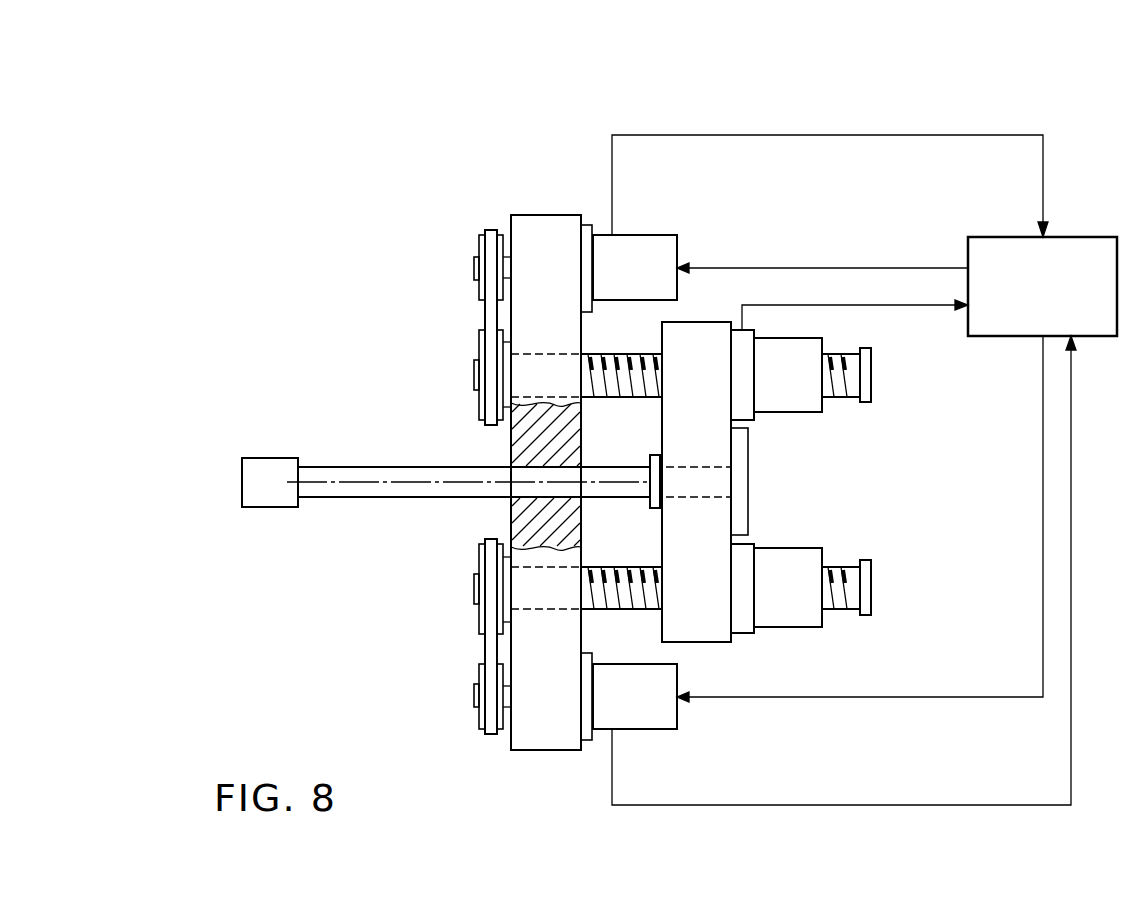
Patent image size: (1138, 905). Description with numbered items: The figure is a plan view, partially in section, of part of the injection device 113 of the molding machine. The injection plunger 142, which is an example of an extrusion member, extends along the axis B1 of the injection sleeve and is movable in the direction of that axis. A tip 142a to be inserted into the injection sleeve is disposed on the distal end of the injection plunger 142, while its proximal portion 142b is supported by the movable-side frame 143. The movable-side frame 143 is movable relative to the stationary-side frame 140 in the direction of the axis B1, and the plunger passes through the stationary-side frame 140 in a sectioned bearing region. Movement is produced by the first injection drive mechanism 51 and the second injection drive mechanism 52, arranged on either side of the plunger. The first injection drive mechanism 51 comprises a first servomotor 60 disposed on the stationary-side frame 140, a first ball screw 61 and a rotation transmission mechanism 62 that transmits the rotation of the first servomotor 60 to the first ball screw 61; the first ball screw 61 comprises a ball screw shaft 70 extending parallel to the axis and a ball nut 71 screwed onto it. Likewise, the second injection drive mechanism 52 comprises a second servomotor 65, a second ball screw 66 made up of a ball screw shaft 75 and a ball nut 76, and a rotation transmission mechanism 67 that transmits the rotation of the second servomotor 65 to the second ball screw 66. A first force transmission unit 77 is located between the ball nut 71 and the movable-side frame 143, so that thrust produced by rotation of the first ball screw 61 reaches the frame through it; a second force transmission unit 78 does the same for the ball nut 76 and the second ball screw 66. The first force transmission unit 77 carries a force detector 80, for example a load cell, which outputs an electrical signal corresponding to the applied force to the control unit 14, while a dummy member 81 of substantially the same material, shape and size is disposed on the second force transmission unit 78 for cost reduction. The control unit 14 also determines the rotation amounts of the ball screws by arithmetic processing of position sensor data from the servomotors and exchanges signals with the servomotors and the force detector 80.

The injection device 113 is at (813, 84).
The stationary-side frame 140 is at (544, 214).
The axis B1 is at (462, 482).
The injection plunger 142 is at (365, 466).
The tip 142a is at (272, 457).
The proximal portion 142b is at (649, 460).
The movable-side frame 143 is at (715, 482).
The rotation transmission mechanism 62 is at (483, 313).
The rotation transmission mechanism 67 is at (483, 645).
The first injection drive mechanism 51 is at (708, 227).
The first servomotor 60 is at (637, 234).
The ball screw shaft 70 is at (625, 353).
The first force transmission unit 77 is at (730, 343).
The force detector 80 is at (748, 375).
The ball nut 71 is at (815, 337).
The first ball screw 61 is at (845, 378).
The control unit 14 is at (1083, 236).
The second injection drive mechanism 52 is at (712, 730).
The second servomotor 65 is at (652, 730).
The ball screw shaft 75 is at (620, 611).
The second force transmission unit 78 is at (733, 618).
The dummy member 81 is at (750, 587).
The ball nut 76 is at (797, 628).
The second ball screw 66 is at (845, 596).